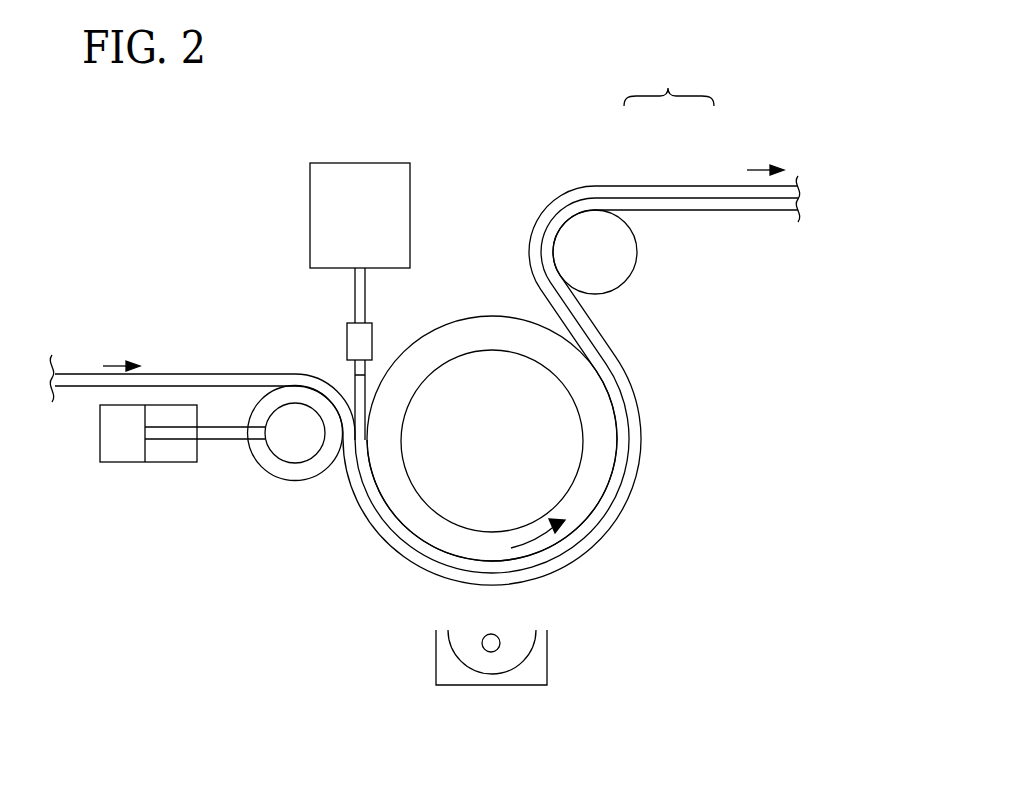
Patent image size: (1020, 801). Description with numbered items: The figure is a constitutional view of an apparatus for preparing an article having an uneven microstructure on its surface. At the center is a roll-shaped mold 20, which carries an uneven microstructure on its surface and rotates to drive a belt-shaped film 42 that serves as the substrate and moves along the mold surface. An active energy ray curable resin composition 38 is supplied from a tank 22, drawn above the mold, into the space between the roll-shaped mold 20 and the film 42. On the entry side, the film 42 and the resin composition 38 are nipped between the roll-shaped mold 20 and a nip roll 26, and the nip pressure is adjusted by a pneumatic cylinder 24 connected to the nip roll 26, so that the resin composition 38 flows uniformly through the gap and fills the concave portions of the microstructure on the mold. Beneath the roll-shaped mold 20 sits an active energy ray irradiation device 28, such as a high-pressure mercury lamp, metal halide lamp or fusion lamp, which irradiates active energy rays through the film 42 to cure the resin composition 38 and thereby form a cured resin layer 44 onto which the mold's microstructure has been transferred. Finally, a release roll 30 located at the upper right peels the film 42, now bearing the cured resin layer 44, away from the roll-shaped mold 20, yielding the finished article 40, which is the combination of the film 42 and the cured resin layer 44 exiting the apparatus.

The roll-shaped mold 20 is at (486, 315).
The tank 22 is at (309, 212).
The pneumatic cylinder 24 is at (168, 462).
The nip roll 26 is at (297, 481).
The active energy ray irradiation device 28 is at (548, 645).
The release roll 30 is at (638, 255).
The active energy ray curable resin composition 38 is at (356, 384).
The article 40 is at (669, 81).
The belt-shaped film 42 is at (204, 373).
The cured resin layer 44 is at (651, 185).